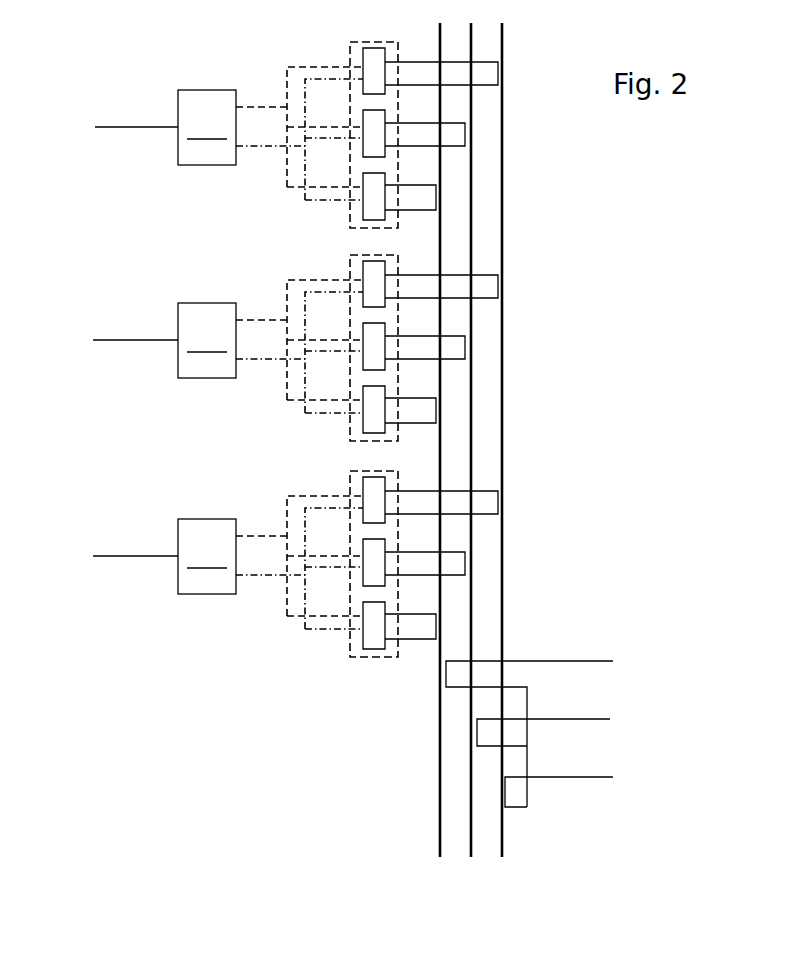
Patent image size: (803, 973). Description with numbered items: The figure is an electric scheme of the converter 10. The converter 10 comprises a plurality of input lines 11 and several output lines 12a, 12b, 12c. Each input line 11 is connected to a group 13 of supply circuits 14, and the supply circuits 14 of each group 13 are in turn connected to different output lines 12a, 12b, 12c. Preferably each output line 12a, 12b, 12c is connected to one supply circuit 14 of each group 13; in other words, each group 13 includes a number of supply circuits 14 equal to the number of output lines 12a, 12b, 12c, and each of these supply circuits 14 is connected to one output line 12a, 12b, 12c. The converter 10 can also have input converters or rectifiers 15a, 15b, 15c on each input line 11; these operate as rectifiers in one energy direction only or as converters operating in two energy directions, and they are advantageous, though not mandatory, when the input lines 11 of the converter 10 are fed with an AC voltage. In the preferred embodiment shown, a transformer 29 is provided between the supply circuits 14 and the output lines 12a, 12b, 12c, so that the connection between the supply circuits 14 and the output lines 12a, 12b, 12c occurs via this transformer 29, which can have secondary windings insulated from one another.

The converter 10 is at (150, 640).
The input line 11 is at (138, 122).
The output line 12a is at (577, 661).
The output line 12b is at (572, 719).
The output line 12c is at (575, 777).
The group 13 is at (327, 604).
The supply circuit 14 is at (304, 598).
The input converter or rectifier 15a is at (207, 127).
The input converter or rectifier 15b is at (207, 340).
The input converter or rectifier 15c is at (207, 556).
The transformer 29 is at (522, 852).